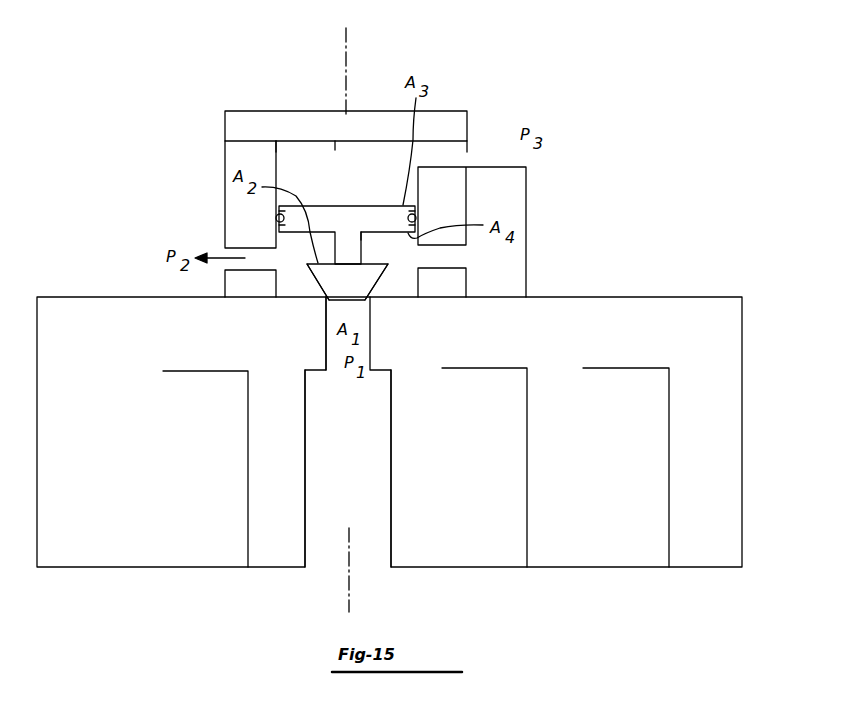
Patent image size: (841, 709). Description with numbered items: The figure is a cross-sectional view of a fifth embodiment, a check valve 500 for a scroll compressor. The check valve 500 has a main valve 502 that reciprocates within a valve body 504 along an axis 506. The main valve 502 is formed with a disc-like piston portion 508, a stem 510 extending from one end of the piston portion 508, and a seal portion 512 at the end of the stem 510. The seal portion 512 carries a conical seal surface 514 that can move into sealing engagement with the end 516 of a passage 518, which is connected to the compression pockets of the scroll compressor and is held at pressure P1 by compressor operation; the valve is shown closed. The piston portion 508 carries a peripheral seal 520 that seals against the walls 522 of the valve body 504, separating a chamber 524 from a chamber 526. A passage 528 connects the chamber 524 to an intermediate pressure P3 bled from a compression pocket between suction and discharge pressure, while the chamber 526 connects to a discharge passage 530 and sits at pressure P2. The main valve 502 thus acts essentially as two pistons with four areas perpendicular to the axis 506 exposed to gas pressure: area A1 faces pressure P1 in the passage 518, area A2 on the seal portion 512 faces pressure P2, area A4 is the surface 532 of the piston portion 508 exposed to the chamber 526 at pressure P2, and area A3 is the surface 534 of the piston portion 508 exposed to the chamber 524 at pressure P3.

The check valve 500 is at (451, 103).
The main valve 502 is at (332, 216).
The valve body 504 is at (238, 153).
The axis 506 is at (346, 37).
The piston portion 508 is at (412, 205).
The stem 510 is at (361, 244).
The seal portion 512 is at (364, 285).
The conical seal surface 514 is at (318, 285).
The end of passage 516 is at (325, 298).
The passage 518 is at (333, 360).
The peripheral seal 520 is at (277, 218).
The walls 522 is at (277, 152).
The chamber 524 is at (343, 150).
The chamber 526 is at (401, 244).
The passage 528 is at (457, 152).
The discharge passage 530 is at (228, 266).
The surface 532 is at (371, 234).
The surface 534 is at (346, 126).